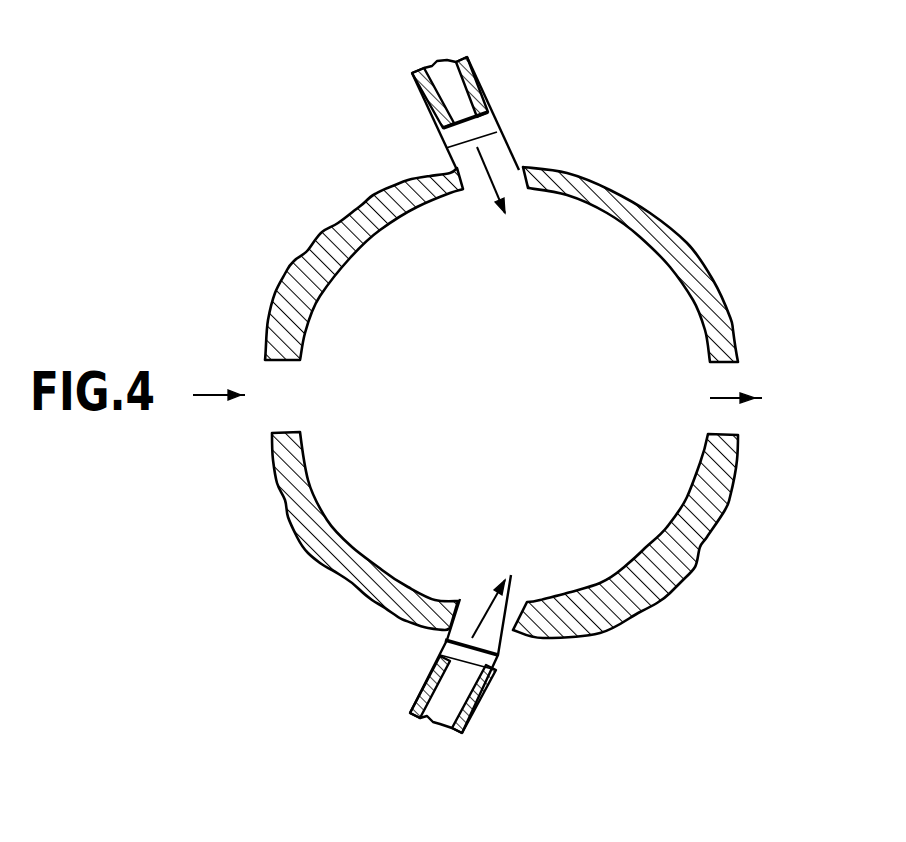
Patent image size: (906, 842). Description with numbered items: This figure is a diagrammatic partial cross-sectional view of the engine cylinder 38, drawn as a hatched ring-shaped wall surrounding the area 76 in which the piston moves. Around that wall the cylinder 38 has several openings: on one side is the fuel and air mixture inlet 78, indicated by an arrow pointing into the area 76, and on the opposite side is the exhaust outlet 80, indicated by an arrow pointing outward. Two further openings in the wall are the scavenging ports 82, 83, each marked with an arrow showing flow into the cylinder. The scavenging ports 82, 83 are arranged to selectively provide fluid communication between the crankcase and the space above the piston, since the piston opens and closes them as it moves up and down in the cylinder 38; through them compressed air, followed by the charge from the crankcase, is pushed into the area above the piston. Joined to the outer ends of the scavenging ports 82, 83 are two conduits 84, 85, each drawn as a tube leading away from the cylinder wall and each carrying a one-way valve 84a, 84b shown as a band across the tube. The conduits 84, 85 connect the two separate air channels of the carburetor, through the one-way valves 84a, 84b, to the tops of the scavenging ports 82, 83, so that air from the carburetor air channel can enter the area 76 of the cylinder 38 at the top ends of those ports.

The cylinder 38 is at (663, 602).
The area 76 is at (525, 414).
The fuel and air mixture inlet 78 is at (290, 388).
The exhaust outlet 80 is at (725, 415).
The scavenging port 82 is at (476, 607).
The scavenging port 83 is at (470, 187).
The conduit 84 is at (482, 693).
The one-way valve 84a is at (457, 647).
The one-way valve 84b is at (497, 119).
The conduit 85 is at (472, 75).